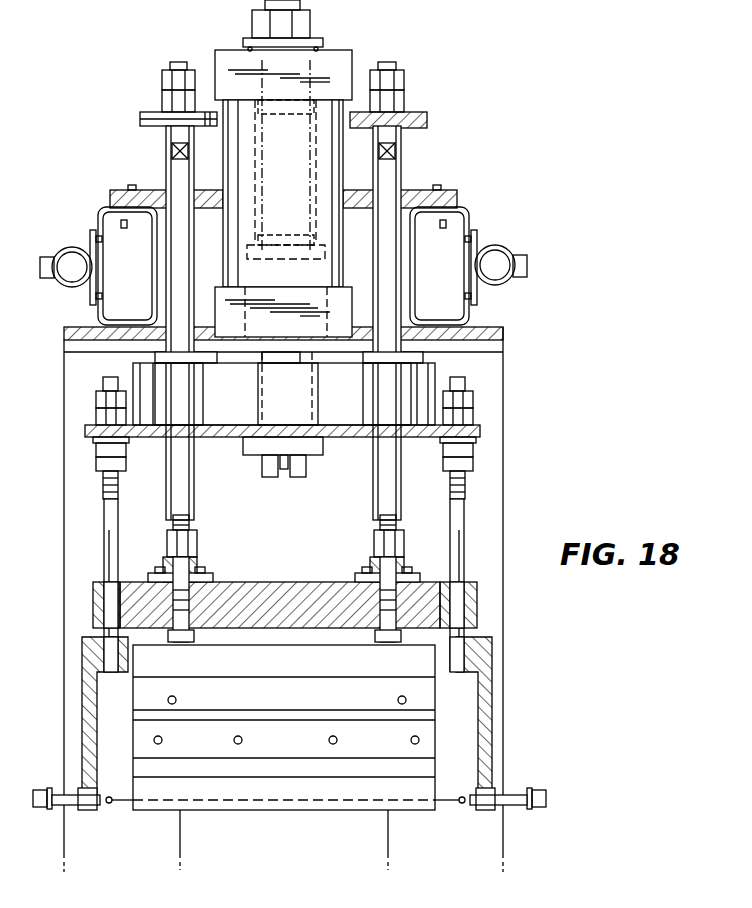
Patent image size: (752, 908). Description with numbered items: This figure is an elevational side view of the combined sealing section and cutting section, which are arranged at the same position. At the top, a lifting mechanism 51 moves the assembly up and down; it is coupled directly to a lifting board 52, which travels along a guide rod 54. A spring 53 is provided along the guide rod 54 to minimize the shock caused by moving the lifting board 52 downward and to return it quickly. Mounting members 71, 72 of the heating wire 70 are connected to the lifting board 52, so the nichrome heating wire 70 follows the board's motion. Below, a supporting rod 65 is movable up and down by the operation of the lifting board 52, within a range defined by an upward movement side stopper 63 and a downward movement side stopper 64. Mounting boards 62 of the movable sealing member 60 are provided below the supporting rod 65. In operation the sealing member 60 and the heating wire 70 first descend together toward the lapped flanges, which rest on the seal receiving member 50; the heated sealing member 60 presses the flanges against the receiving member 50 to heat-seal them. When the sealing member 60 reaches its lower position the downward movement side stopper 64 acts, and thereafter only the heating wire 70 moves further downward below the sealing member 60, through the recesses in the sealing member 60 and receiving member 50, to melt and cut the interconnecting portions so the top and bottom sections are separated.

The seal receiving member 50 is at (373, 830).
The lifting mechanism 51 is at (291, 156).
The lifting board 52 is at (352, 413).
The spring 53 is at (323, 49).
The guide rod 54 is at (262, 80).
The movable sealing member 60 is at (270, 805).
The mounting board 62 is at (297, 588).
The upward movement side stopper 63 is at (158, 357).
The downward movement side stopper 64 is at (148, 120).
The supporting rod 65 is at (387, 176).
The heating wire 70 is at (127, 800).
The mounting member 71 is at (108, 538).
The mounting member 72 is at (88, 720).